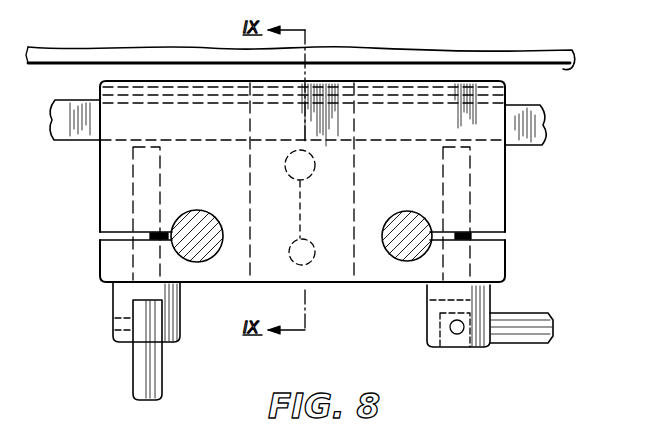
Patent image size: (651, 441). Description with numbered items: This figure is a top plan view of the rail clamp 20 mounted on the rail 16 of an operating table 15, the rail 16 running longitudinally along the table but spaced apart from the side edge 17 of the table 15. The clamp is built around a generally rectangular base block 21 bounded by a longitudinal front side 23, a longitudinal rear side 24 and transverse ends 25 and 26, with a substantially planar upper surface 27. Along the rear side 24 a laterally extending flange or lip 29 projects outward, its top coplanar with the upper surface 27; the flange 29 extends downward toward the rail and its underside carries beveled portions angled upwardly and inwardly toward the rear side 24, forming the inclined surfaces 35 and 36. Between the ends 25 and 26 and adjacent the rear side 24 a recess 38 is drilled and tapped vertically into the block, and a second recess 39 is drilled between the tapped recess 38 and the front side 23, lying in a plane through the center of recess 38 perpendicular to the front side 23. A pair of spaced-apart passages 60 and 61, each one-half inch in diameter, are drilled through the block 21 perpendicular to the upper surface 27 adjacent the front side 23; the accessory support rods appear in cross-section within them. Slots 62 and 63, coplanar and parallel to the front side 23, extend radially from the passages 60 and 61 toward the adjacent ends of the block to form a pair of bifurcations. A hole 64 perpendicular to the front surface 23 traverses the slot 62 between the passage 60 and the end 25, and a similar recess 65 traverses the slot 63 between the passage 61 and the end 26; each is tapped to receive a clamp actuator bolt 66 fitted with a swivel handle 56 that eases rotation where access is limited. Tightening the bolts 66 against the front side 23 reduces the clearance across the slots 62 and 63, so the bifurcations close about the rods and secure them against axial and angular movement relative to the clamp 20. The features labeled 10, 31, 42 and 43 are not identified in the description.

The roller 10 is at (203, 212).
The operating table 15 is at (548, 46).
The rail 16 is at (546, 124).
The side edge 17 is at (565, 70).
The rail clamp 20 is at (516, 187).
The base block 21 is at (338, 284).
The front side 23 is at (392, 284).
The rear side 24 is at (233, 140).
The end 25 is at (98, 190).
The end 26 is at (505, 209).
The upper surface 27 is at (394, 167).
The flange 29 is at (145, 118).
The flange 31 is at (115, 80).
The inclined surface 35 is at (412, 90).
The inclined surface 36 is at (200, 100).
The tapped recess 38 is at (313, 178).
The second recess 39 is at (300, 238).
The passage 42 is at (250, 172).
The passage 43 is at (356, 130).
The swivel handle 56 is at (133, 360).
The passage 60 is at (208, 252).
The passage 61 is at (392, 222).
The slot 62 is at (100, 236).
The slot 63 is at (495, 241).
The tapped recess 64 is at (140, 166).
The recess 65 is at (470, 172).
The clamp actuator bolt 66 is at (180, 322).